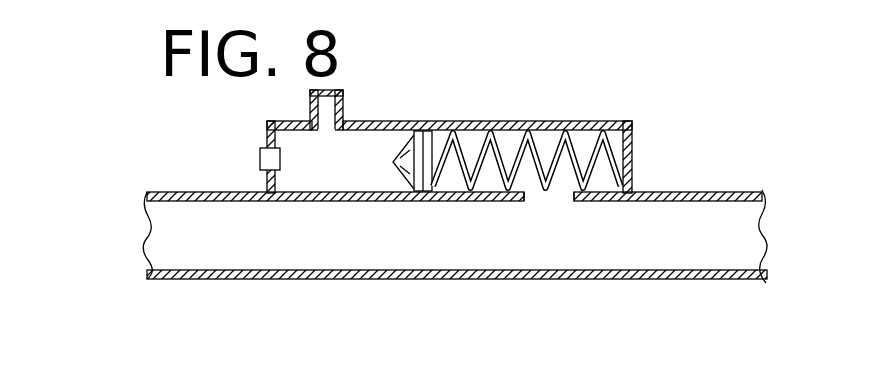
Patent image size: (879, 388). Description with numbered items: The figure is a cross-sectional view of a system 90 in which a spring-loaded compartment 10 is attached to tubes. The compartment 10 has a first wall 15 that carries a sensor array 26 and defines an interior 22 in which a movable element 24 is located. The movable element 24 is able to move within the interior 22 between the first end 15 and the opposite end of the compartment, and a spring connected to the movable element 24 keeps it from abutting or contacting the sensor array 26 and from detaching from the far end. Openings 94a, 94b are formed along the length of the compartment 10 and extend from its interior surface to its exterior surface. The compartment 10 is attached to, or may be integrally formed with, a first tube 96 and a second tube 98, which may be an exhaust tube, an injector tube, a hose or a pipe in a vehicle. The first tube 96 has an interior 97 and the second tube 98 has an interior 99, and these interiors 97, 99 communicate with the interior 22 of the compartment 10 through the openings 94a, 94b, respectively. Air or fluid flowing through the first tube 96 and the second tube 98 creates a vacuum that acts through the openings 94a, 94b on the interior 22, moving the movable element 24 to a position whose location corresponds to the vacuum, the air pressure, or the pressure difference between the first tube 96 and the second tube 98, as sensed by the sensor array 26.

The system 90 is at (124, 168).
The first wall 15 is at (266, 128).
The sensor array 26 is at (260, 158).
The interior 22 is at (303, 147).
The second tube 98 is at (340, 93).
The interior 99 is at (345, 100).
The compartment 10 is at (343, 153).
The movable element 24 is at (420, 138).
The first tube 96 is at (168, 282).
The interior 97 is at (372, 247).
The opening 94a is at (552, 203).
The opening 94b is at (326, 134).